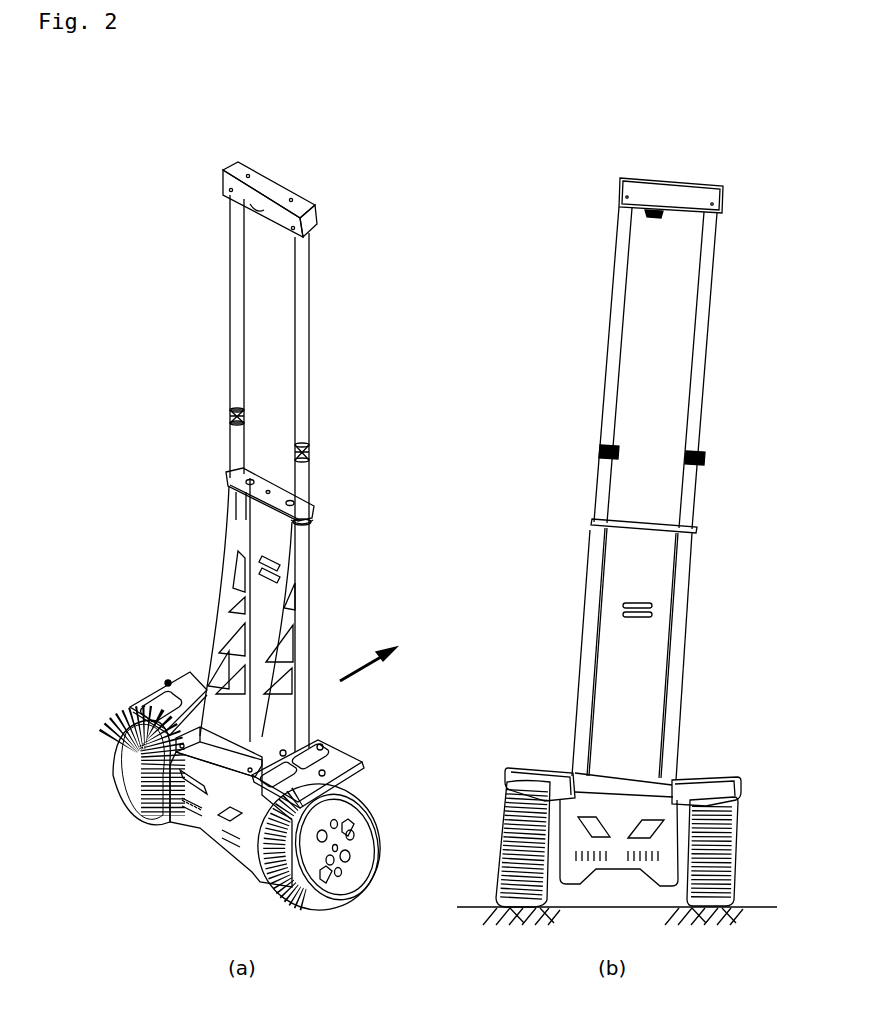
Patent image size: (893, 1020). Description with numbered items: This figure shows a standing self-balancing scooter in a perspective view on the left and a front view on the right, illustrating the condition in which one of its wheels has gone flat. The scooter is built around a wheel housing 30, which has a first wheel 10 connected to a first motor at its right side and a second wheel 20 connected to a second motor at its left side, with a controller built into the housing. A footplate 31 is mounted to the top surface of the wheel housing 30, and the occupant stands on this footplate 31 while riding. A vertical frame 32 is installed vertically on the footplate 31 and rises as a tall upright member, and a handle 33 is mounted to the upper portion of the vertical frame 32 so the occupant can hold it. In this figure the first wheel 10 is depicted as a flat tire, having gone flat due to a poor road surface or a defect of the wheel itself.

The first wheel 10 is at (282, 903).
The second wheel 20 is at (130, 815).
The wheel housing 30 is at (215, 835).
The footplate 31 is at (160, 690).
The vertical frame 32 is at (236, 362).
The handle 33 is at (267, 184).